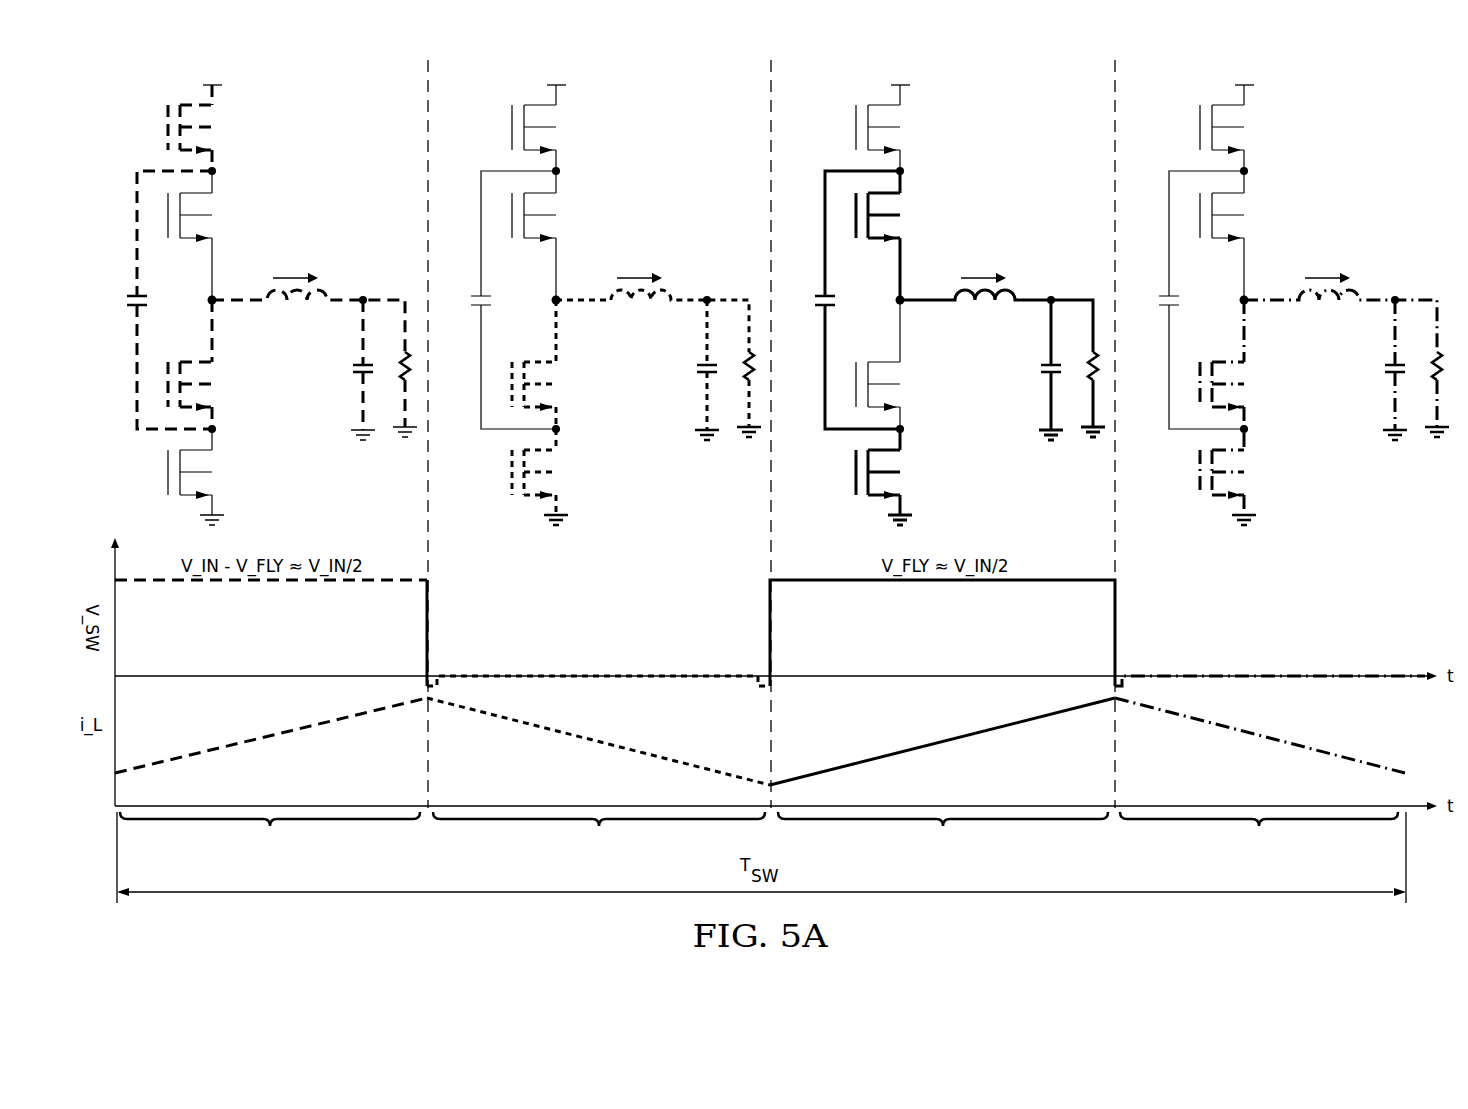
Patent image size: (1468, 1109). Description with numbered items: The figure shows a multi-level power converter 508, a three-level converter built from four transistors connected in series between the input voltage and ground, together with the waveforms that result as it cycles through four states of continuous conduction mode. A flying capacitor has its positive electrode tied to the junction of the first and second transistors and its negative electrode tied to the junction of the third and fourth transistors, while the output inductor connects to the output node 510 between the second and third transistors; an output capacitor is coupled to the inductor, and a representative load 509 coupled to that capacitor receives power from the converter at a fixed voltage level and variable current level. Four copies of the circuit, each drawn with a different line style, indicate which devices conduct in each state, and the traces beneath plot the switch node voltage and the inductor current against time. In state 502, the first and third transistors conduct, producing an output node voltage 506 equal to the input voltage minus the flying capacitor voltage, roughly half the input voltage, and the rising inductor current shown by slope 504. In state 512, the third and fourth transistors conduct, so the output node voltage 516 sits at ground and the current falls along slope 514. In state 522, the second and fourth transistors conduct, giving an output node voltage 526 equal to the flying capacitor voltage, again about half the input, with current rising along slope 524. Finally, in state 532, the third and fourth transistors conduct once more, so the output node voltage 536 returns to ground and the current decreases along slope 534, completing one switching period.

The state 502 is at (270, 834).
The slope 504 is at (272, 735).
The output node voltage 506 is at (273, 583).
The multi-level power converter 508 is at (347, 110).
The load 509 is at (402, 372).
The output node 510 is at (217, 304).
The state 512 is at (599, 834).
The slope 514 is at (617, 746).
The output node voltage 516 is at (600, 675).
The state 522 is at (943, 834).
The slope 524 is at (940, 742).
The output node voltage 526 is at (968, 583).
The state 532 is at (1259, 834).
The slope 534 is at (1283, 741).
The output node voltage 536 is at (1275, 675).